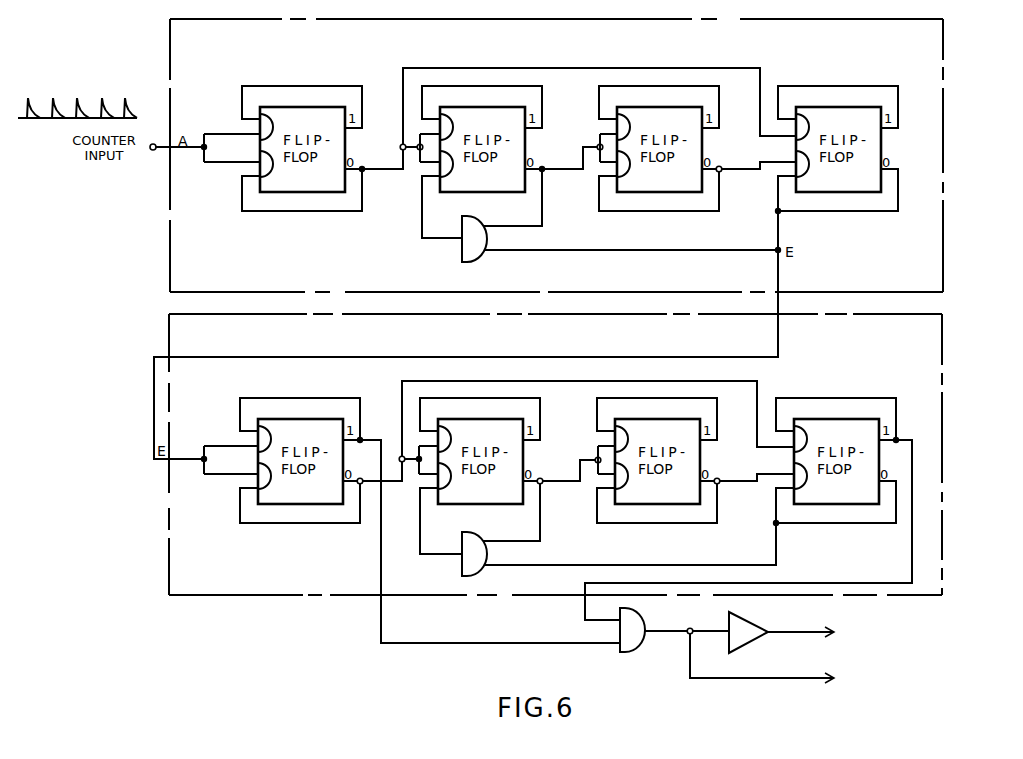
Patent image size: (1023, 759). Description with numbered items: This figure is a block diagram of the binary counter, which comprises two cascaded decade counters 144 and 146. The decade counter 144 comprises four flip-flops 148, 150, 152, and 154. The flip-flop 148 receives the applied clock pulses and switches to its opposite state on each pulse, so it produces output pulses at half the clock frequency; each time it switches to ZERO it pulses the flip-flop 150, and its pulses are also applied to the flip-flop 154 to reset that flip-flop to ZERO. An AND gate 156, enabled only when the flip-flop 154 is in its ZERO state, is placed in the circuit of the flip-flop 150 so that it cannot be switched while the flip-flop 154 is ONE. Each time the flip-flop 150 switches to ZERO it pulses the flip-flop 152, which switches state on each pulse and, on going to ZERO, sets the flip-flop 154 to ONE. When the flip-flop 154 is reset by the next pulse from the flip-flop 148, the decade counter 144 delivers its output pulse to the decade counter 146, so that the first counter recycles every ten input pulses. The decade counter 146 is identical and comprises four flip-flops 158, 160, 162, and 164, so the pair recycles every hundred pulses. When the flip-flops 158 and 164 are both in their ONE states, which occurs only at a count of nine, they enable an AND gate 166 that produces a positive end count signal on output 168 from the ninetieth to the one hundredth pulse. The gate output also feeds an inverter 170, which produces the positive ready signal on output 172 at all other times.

The decade counter 144 is at (178, 72).
The decade counter 146 is at (180, 336).
The flip-flop 148 is at (340, 139).
The flip-flop 150 is at (522, 138).
The flip-flop 152 is at (696, 133).
The flip-flop 154 is at (876, 140).
The AND gate 156 is at (472, 252).
The flip-flop 158 is at (285, 492).
The flip-flop 160 is at (480, 495).
The flip-flop 162 is at (658, 497).
The flip-flop 164 is at (833, 498).
The AND gate 166 is at (633, 645).
The output 168 is at (777, 675).
The inverter 170 is at (728, 623).
The output 172 is at (783, 628).